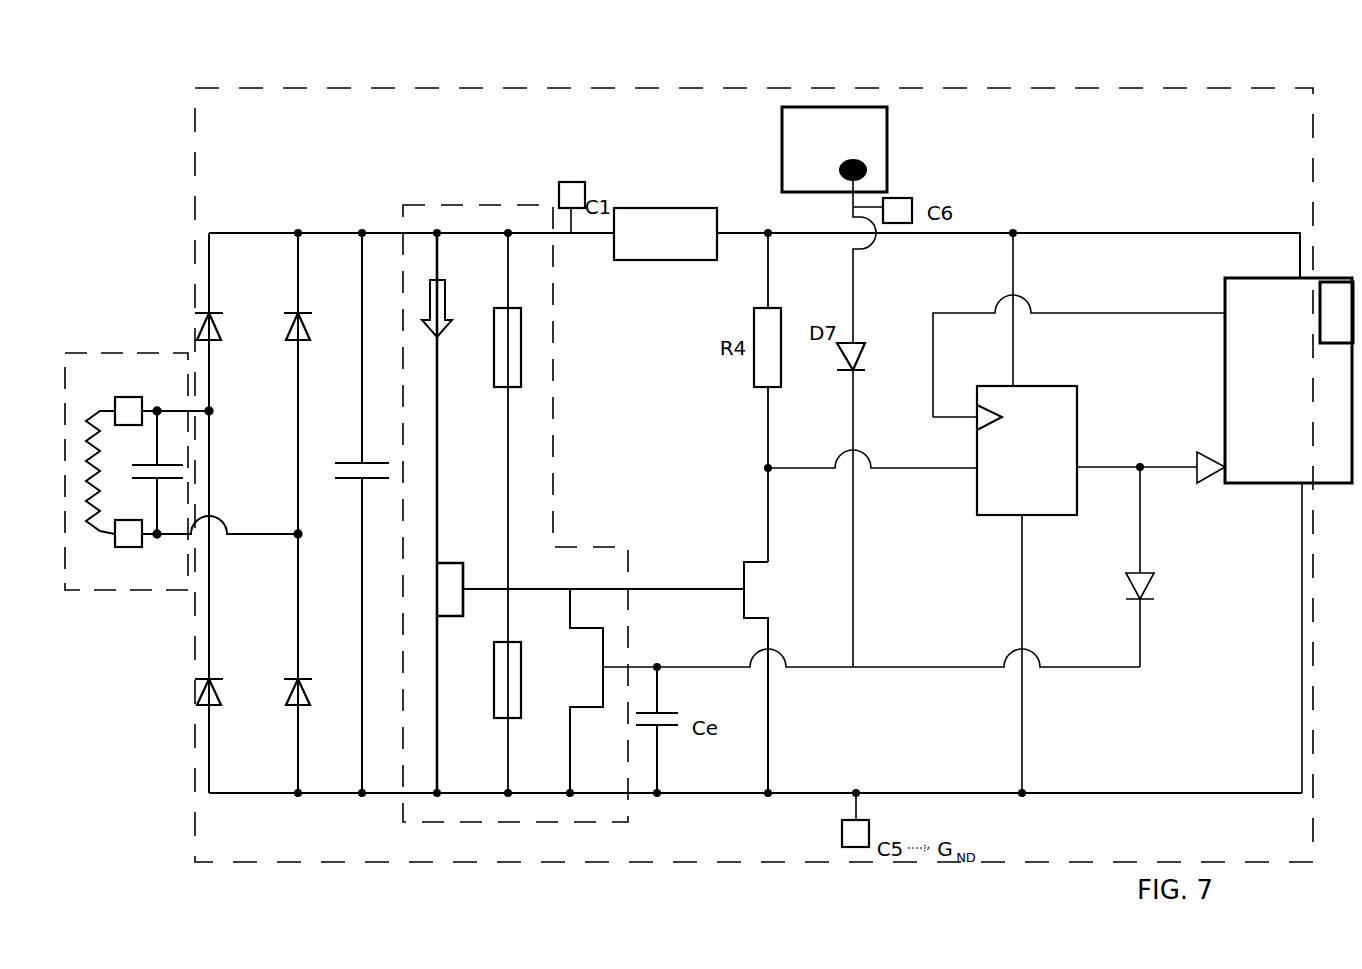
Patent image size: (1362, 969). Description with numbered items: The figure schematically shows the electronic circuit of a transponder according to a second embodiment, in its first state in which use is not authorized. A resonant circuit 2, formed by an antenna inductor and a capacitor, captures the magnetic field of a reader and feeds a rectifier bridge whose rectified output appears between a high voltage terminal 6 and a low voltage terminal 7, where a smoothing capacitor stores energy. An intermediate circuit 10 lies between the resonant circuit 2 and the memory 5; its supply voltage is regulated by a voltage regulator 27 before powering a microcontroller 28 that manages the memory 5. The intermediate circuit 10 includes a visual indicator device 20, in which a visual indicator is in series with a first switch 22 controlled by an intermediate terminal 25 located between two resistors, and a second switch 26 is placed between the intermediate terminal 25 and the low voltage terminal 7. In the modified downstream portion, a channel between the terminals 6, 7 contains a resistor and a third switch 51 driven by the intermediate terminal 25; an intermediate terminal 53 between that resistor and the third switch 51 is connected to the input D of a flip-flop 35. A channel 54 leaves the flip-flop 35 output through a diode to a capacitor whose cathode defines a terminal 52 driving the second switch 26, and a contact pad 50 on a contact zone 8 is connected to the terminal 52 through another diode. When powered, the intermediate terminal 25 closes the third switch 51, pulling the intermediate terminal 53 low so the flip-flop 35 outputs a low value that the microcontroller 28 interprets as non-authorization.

The resonant circuit 2 is at (87, 577).
The memory 5 is at (1343, 283).
The high voltage terminal 6 is at (370, 232).
The low voltage terminal 7 is at (370, 796).
The contact zone 8 is at (808, 117).
The intermediate circuit 10 is at (224, 208).
The visual indicator device 20 is at (515, 472).
The first switch 22 is at (457, 603).
The intermediate terminal 25 is at (665, 583).
The second switch 26 is at (592, 676).
The voltage regulator 27 is at (632, 210).
The microcontroller 28 is at (1292, 484).
The flip-flop 35 is at (1056, 503).
The contact pad 50 is at (840, 170).
The third switch 51 is at (758, 594).
The terminal 52 is at (858, 662).
The intermediate terminal 53 is at (768, 468).
The channel 54 is at (1142, 628).